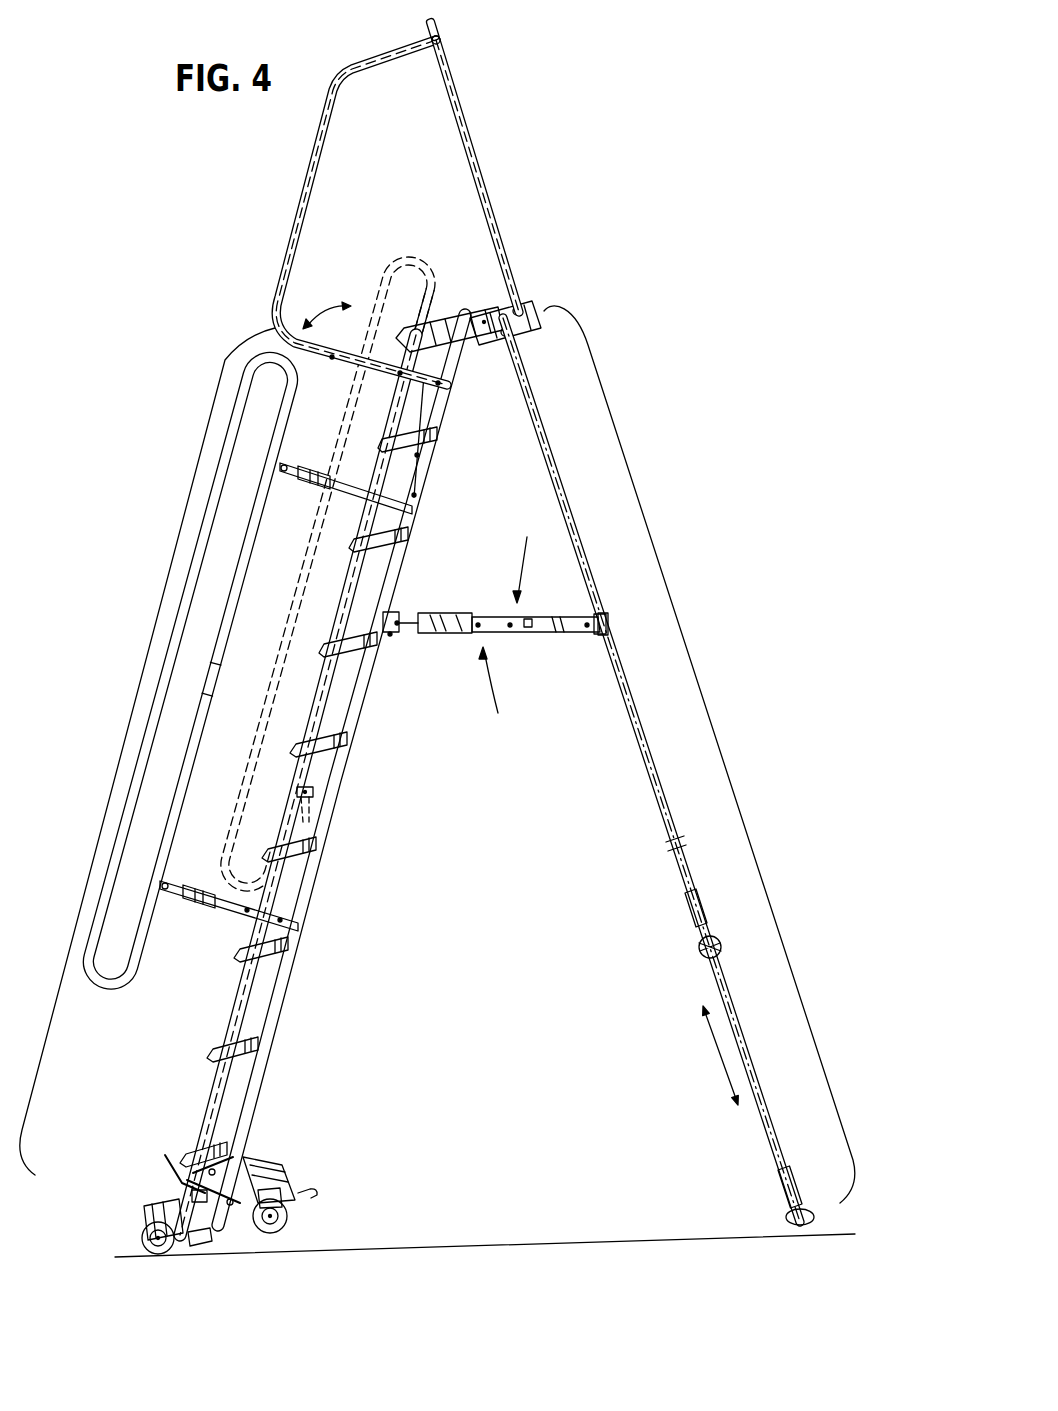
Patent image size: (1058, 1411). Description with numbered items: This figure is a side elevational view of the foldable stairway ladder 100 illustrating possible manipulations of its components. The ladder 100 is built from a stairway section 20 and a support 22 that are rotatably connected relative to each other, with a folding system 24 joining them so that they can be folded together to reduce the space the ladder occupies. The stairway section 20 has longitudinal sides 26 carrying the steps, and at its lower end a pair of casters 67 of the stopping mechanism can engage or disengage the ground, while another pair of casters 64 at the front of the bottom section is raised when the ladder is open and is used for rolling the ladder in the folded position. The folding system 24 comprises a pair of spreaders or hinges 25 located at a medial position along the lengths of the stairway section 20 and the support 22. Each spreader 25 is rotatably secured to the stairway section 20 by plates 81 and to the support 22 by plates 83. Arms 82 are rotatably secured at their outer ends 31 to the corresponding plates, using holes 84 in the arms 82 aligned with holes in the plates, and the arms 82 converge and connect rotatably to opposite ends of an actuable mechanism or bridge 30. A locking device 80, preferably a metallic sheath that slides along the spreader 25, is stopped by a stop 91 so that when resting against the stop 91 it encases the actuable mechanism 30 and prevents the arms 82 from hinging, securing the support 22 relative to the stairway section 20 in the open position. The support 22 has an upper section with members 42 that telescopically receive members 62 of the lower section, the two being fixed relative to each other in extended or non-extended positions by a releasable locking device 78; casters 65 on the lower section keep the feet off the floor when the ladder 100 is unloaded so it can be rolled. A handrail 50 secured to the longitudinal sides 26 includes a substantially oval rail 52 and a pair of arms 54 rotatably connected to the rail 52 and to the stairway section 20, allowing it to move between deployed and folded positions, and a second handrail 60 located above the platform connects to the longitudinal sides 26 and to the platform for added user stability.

The foldable stairway ladder 100 is at (437, 630).
The handrail 60 is at (483, 163).
The handrail 50 is at (356, 201).
The stairway section 20 is at (280, 752).
The support 22 is at (679, 765).
The members 42 is at (667, 771).
The spreaders or hinges 25 is at (527, 559).
The folding system 24 is at (495, 691).
The arms 82 is at (572, 616).
The locking device 80 is at (445, 613).
The actuable mechanism or bridge 30 is at (519, 628).
The stop 91 is at (528, 618).
The outer ends 31 is at (396, 614).
The plates 83 is at (604, 613).
The holes 84 is at (398, 632).
The plates 81 is at (390, 640).
The releasable locking device 78 is at (676, 840).
The arms 54 is at (193, 890).
The members 62 is at (742, 1038).
The rail 52 is at (82, 951).
The longitudinal sides 26 is at (222, 1030).
The casters 65 is at (812, 1212).
The casters 64 is at (140, 1237).
The casters 67 is at (290, 1213).